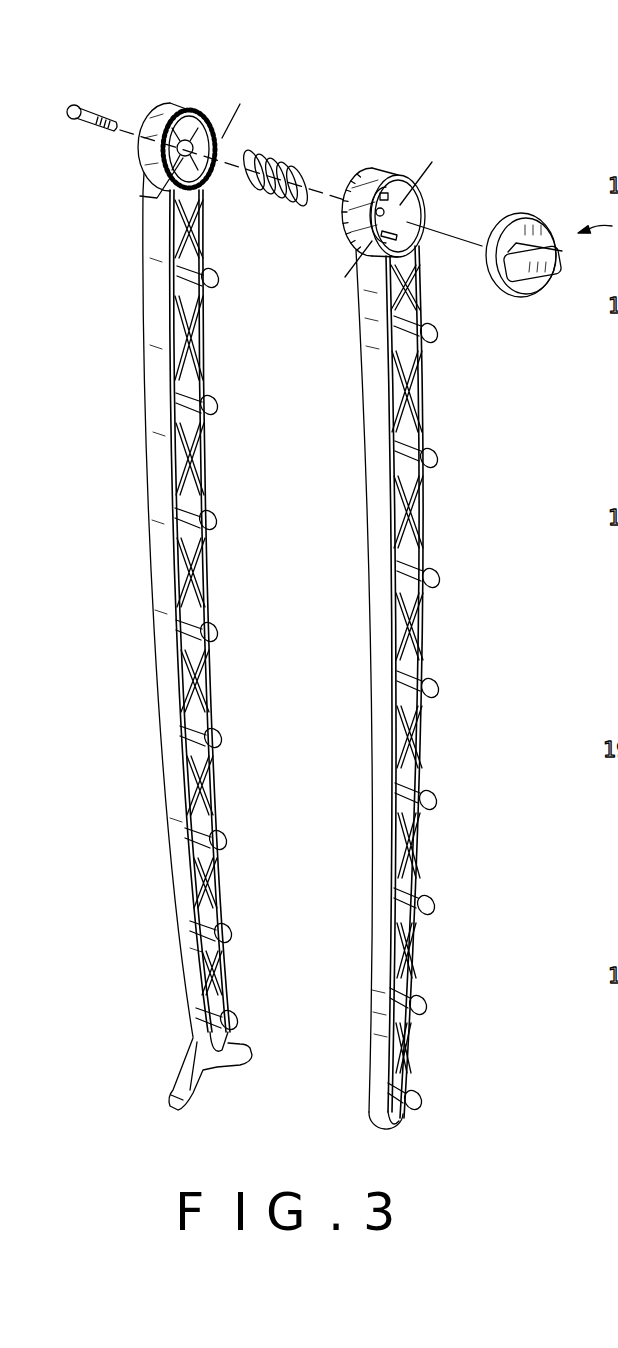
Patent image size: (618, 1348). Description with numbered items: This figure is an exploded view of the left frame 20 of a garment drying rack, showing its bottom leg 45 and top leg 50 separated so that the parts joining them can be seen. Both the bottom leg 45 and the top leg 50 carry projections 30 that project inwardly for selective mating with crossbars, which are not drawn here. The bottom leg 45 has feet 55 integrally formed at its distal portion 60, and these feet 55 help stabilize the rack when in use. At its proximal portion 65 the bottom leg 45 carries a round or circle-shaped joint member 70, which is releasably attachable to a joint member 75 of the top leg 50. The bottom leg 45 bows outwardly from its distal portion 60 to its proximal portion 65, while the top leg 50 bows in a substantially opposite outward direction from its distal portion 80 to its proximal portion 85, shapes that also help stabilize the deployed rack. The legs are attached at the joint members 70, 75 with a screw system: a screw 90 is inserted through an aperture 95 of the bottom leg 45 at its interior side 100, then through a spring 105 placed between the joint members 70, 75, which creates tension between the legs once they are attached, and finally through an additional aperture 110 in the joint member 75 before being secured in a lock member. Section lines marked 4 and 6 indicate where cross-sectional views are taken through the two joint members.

The section line 4- 4 is at (240, 104).
The section line 6- 6 is at (445, 172).
The left frame 20 is at (442, 128).
The projections 30 is at (176, 515).
The bottom leg 45 is at (126, 632).
The top leg 50 is at (488, 546).
The feet 55 is at (177, 1093).
The distal portion 60 is at (158, 1037).
The proximal portion 65 is at (100, 143).
The joint member 70 is at (162, 88).
The joint member 75 is at (366, 143).
The distal portion 80 is at (423, 1131).
The proximal portion 85 is at (472, 158).
The screw 90 is at (78, 106).
The aperture 95 is at (183, 108).
The interior side 100 is at (154, 150).
The spring 105 is at (284, 163).
The aperture 110 is at (384, 212).